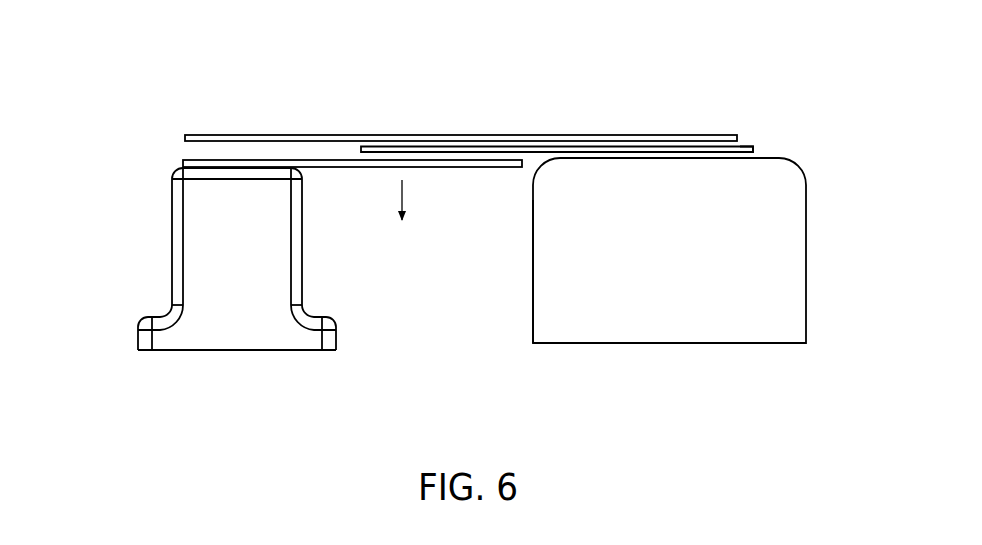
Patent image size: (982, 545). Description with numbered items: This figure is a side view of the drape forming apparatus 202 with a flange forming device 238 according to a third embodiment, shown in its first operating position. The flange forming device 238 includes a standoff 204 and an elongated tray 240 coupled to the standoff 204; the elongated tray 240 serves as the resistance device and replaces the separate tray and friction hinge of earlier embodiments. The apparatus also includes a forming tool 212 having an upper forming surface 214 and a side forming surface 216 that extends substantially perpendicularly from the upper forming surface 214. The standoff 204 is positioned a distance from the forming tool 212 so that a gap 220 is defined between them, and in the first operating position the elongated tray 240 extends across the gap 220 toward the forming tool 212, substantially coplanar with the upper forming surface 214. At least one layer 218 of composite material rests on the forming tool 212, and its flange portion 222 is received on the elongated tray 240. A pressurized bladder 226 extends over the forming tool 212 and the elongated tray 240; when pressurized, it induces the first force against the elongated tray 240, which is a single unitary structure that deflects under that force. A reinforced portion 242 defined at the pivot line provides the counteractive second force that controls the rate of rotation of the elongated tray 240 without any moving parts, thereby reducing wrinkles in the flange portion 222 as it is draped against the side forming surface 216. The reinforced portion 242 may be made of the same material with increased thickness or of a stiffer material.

The drape forming apparatus 202 is at (692, 50).
The standoff 204 is at (172, 232).
The forming tool 212 is at (806, 192).
The upper forming surface 214 is at (777, 158).
The side forming surface 216 is at (533, 287).
The layer of composite material 218 is at (749, 147).
The gap 220 is at (393, 330).
The flange portion 222 is at (465, 146).
The pressurized bladder 226 is at (727, 136).
The flange forming device 238 is at (128, 148).
The elongated tray 240 is at (462, 168).
The reinforced portion 242 is at (318, 183).